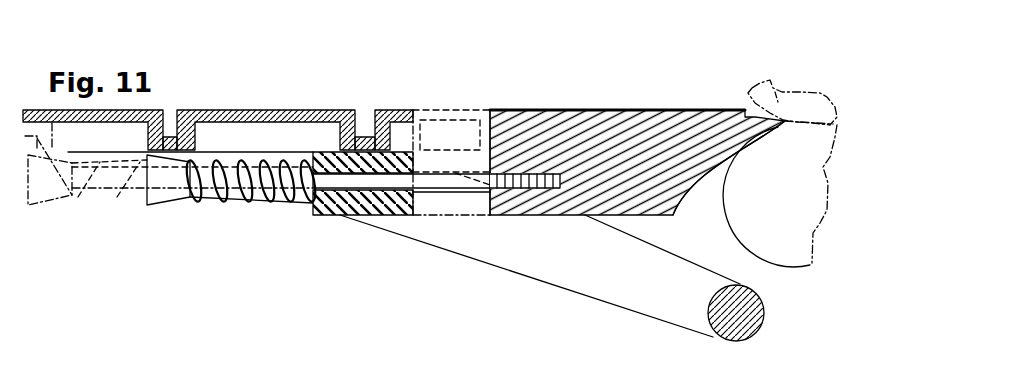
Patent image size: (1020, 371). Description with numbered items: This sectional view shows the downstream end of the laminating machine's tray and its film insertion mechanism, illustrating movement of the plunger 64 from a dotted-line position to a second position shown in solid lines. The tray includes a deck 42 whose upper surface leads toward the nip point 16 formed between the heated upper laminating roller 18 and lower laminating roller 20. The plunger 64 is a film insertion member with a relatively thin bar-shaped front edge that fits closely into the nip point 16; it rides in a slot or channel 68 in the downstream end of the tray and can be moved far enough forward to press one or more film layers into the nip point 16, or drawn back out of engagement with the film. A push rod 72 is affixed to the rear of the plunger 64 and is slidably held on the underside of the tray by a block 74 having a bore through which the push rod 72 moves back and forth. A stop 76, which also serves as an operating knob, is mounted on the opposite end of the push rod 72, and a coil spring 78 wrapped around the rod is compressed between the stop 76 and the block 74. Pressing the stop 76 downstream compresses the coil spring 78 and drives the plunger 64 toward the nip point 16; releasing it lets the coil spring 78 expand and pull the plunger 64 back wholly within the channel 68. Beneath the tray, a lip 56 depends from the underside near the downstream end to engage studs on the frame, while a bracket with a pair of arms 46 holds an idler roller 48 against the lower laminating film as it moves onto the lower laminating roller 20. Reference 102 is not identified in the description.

The nip point 16 is at (833, 123).
The upper laminating roller 18 is at (770, 78).
The lower laminating roller 20 is at (793, 222).
The deck 42 is at (288, 108).
The arms 46 is at (562, 265).
The idler roller 48 is at (740, 318).
The lip 56 is at (678, 202).
The plunger 64 is at (633, 140).
The channel 68 is at (455, 110).
The push rod 72 is at (326, 213).
The block 74 is at (362, 215).
The stop 76 is at (157, 195).
The coil spring 78 is at (253, 202).
The lever 102 is at (293, 360).